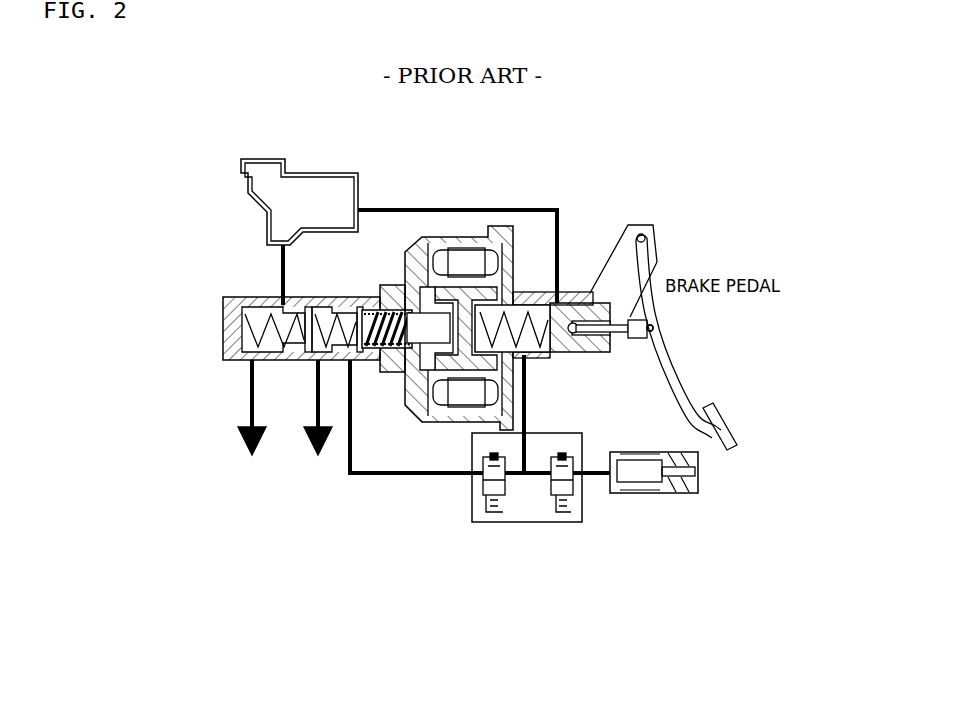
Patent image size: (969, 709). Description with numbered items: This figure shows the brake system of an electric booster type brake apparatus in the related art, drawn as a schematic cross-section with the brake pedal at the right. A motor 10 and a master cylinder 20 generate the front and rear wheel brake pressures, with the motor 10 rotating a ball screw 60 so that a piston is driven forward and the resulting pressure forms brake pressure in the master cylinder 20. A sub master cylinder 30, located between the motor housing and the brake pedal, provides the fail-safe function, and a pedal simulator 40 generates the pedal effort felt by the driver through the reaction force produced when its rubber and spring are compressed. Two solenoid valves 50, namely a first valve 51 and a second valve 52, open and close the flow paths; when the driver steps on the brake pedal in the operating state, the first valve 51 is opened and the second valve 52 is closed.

The motor 10 is at (477, 267).
The master cylinder 20 is at (223, 322).
The sub master cylinder 30 is at (568, 347).
The pedal simulator 40 is at (652, 492).
The solenoid valves 50 is at (538, 519).
The first valve 51 is at (565, 525).
The second valve 52 is at (492, 525).
The ball screw 60 is at (420, 242).